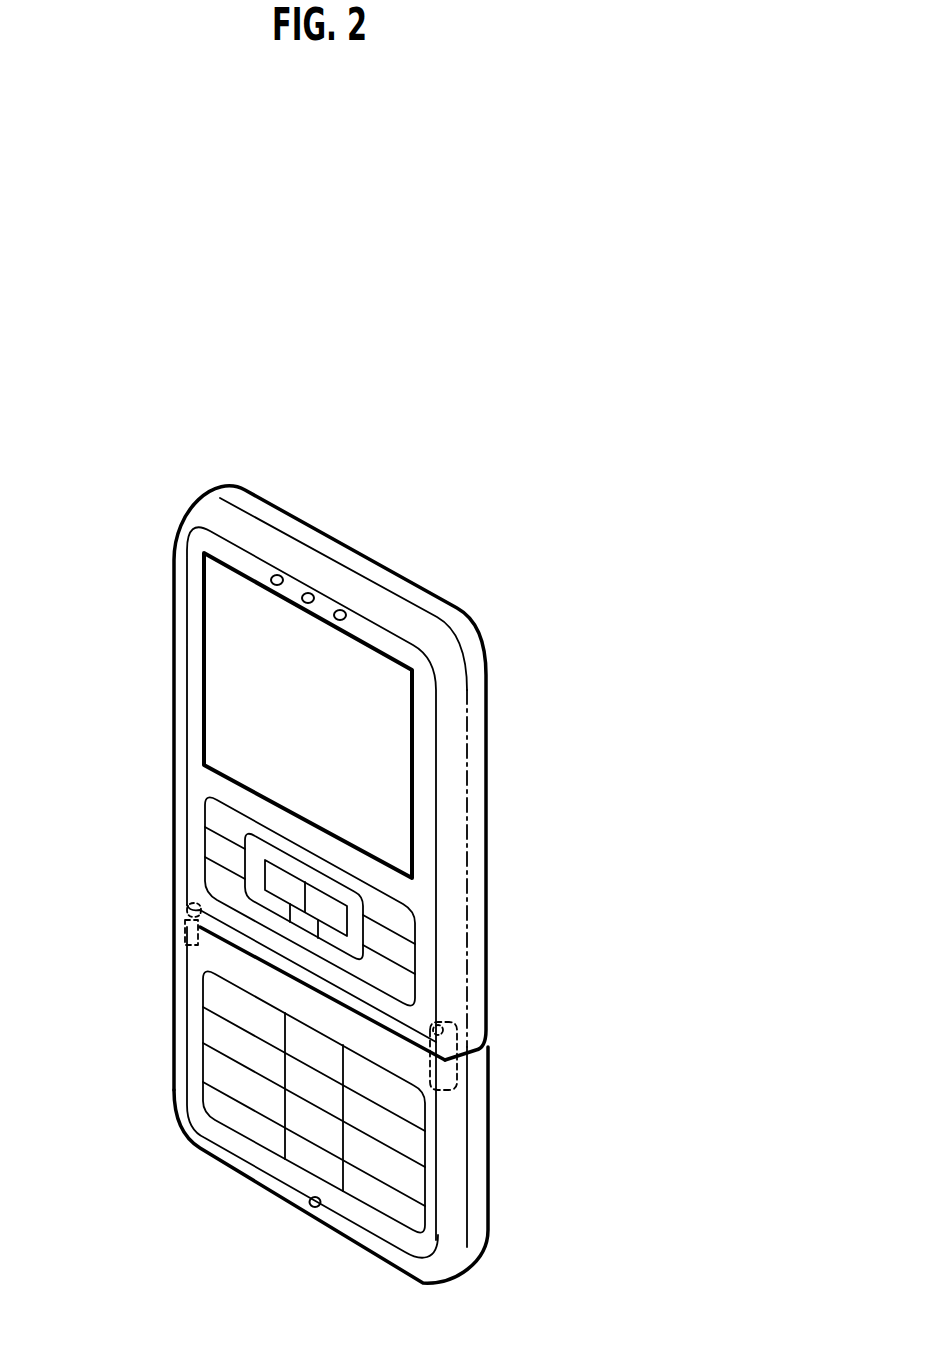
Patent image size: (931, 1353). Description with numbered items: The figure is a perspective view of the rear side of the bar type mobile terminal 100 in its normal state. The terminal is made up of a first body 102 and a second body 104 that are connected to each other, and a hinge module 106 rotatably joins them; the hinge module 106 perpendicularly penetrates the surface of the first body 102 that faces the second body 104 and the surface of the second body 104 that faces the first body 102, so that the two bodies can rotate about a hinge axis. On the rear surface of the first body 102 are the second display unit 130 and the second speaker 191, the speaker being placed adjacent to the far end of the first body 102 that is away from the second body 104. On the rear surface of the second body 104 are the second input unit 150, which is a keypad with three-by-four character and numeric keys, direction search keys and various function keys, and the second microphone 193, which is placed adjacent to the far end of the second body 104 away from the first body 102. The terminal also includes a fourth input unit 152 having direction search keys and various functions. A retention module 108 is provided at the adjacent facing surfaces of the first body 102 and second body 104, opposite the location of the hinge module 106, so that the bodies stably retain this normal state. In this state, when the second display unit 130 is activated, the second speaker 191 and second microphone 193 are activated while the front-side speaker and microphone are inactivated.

The mobile terminal 100 is at (465, 476).
The first body 102 is at (153, 731).
The second body 104 is at (156, 1021).
The hinge module 106 is at (472, 1016).
The retention module 108 is at (175, 916).
The second display unit 130 is at (393, 758).
The second input unit 150 is at (377, 1210).
The fourth input unit 152 is at (353, 923).
The second speaker 191 is at (343, 609).
The second microphone 193 is at (315, 1208).